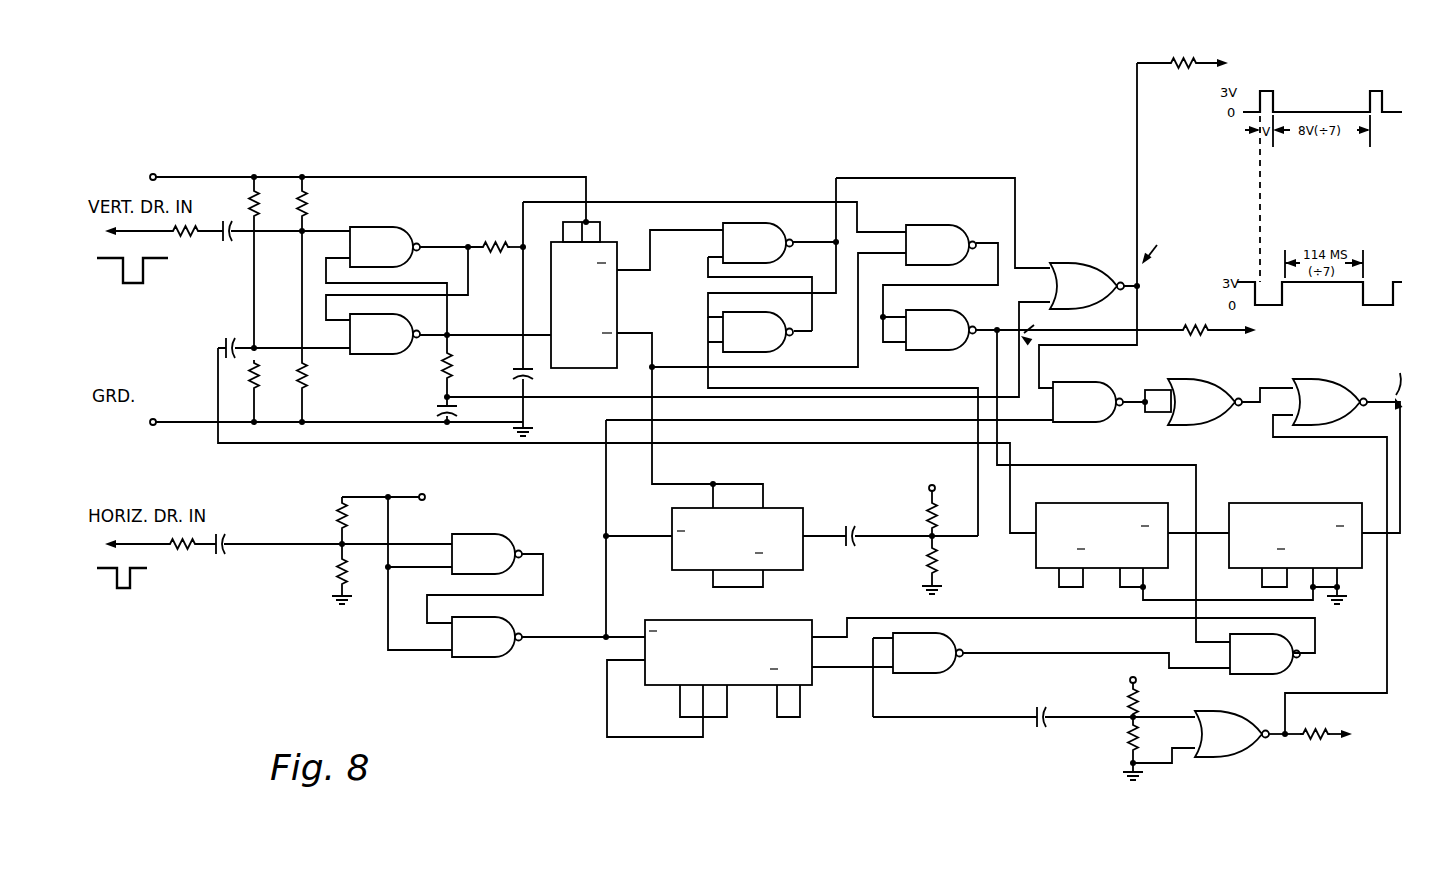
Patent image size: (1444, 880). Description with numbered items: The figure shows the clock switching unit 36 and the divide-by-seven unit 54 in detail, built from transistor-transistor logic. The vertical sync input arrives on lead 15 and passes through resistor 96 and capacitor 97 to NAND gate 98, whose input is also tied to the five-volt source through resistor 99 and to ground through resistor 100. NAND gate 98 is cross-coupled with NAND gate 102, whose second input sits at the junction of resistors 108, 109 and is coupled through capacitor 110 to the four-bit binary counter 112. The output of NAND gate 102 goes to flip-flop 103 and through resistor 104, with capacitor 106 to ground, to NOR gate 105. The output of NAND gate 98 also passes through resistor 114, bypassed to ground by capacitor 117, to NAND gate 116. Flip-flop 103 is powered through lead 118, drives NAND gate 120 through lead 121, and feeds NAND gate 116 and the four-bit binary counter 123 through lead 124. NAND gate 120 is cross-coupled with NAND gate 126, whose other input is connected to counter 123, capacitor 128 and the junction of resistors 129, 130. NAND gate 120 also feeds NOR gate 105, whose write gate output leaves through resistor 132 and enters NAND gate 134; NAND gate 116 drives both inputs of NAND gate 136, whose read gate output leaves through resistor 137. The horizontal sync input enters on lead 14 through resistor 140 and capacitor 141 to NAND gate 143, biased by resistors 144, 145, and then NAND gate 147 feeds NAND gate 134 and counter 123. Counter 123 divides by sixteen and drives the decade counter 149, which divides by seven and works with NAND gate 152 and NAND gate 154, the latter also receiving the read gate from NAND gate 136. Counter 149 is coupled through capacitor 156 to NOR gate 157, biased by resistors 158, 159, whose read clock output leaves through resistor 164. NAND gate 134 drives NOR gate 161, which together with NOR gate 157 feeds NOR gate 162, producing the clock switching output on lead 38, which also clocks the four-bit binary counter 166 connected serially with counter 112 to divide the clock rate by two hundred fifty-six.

The lead 14 is at (156, 542).
The lead 15 is at (160, 238).
The clock switching unit 36 is at (1100, 225).
The lead 38 is at (1405, 446).
The ÷7 unit 54 is at (578, 731).
The resistor 96 is at (194, 226).
The capacitor 97 is at (238, 204).
The NAND gate 98 is at (410, 226).
The resistor 99 is at (303, 202).
The resistor 100 is at (305, 388).
The NAND gate 102 is at (370, 354).
The flip-flop 103 is at (619, 300).
The resistor 104 is at (443, 372).
The NOR gate 105 is at (1088, 258).
The capacitor 106 is at (437, 410).
The resistor 108 is at (262, 218).
The resistor 109 is at (254, 382).
The capacitor 110 is at (222, 346).
The 4 bit binary counter 112 is at (1125, 500).
The resistor 114 is at (496, 243).
The NAND gate 116 is at (966, 220).
The capacitor 117 is at (512, 376).
The lead 118 is at (486, 178).
The NAND gate 120 is at (716, 240).
The lead 121 is at (660, 234).
The 4 bit binary counter 123 is at (782, 506).
The lead 124 is at (658, 345).
The NAND gate 126 is at (785, 350).
The capacitor 128 is at (857, 550).
The resistor 129 is at (922, 512).
The resistor 130 is at (928, 554).
The resistor 132 is at (1188, 58).
The NAND gate 134 is at (1082, 422).
The NAND gate 136 is at (943, 310).
The resistor 137 is at (1200, 320).
The resistor 140 is at (188, 555).
The capacitor 141 is at (228, 533).
The NAND gate 143 is at (488, 534).
The resistor 144 is at (338, 514).
The resistor 145 is at (336, 568).
The NAND gate 147 is at (505, 620).
The decade counter 149 is at (795, 618).
The NAND gate 152 is at (940, 676).
The NAND gate 154 is at (1283, 668).
The capacitor 156 is at (1043, 706).
The NOR gate 157 is at (1245, 706).
The resistor 158 is at (1125, 698).
The resistor 159 is at (1138, 754).
The NOR gate 161 is at (1210, 424).
The NOR gate 162 is at (1347, 412).
The resistor 164 is at (1310, 744).
The 4 bit binary counter 166 is at (1315, 500).